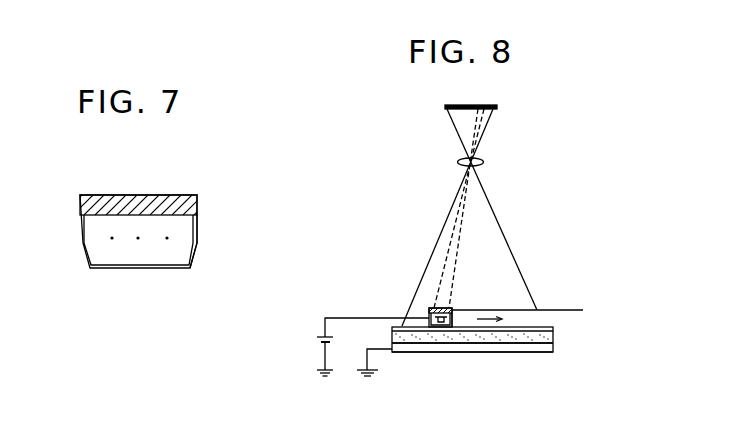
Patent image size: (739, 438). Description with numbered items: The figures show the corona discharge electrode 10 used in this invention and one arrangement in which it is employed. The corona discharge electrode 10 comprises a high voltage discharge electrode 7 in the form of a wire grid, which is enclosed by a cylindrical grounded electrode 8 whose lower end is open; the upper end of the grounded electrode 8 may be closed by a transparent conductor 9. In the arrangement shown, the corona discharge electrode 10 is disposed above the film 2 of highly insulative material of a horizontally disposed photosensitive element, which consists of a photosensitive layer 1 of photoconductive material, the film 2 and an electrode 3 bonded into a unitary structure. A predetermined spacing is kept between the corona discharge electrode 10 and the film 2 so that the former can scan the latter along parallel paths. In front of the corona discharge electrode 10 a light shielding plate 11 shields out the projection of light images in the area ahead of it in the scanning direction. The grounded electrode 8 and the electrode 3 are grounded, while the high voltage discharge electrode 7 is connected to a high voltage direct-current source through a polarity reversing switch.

In FIG. 8, the photosensitive layer 1 is at (553, 339).
In FIG. 8, the film of highly insulative material 2 is at (540, 327).
In FIG. 8, the electrode 3 is at (537, 348).
In FIG. 7, the high voltage discharge electrode 7 is at (111, 238).
In FIG. 8, the high voltage discharge electrode 7 is at (440, 323).
In FIG. 7, the grounded electrode 8 is at (200, 204).
In FIG. 8, the grounded electrode 8 is at (452, 323).
In FIG. 7, the transparent conductor 9 is at (92, 196).
In FIG. 8, the transparent conductor 9 is at (443, 308).
In FIG. 7, the corona discharge electrode 10 is at (148, 184).
In FIG. 8, the corona discharge electrode 10 is at (425, 308).
In FIG. 8, the light shielding plate 11 is at (583, 310).